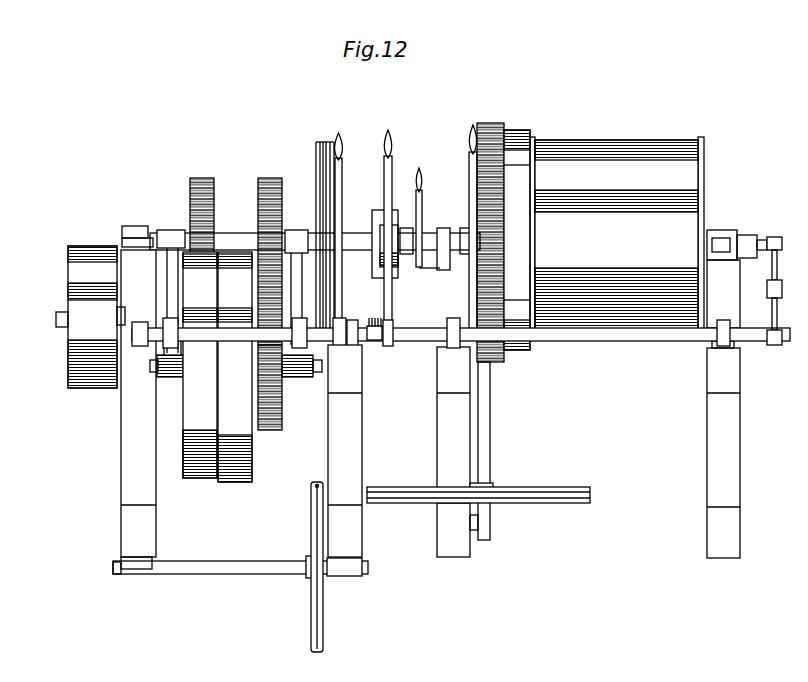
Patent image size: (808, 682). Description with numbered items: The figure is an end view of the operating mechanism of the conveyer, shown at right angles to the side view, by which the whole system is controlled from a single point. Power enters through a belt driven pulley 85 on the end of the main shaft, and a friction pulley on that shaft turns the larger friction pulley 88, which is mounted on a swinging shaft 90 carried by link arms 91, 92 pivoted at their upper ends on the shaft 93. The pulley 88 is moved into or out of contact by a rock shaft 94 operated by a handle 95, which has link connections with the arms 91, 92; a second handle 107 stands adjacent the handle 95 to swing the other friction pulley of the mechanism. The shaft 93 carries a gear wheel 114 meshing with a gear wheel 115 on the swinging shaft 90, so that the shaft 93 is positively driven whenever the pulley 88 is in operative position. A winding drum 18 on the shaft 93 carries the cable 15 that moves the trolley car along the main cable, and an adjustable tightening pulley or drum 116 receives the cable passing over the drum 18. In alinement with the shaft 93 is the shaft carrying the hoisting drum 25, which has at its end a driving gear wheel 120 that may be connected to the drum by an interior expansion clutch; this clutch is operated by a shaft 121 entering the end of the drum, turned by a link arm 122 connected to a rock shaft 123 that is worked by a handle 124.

The belt driven pulley 85 is at (68, 270).
The link arm 91 is at (166, 244).
The shaft 93 is at (228, 238).
The friction pulley 88 is at (200, 365).
The swinging shaft 90 is at (213, 372).
The gear wheel 114 is at (272, 172).
The gear wheel 115 is at (275, 403).
The link arm 92 is at (292, 247).
The winding drum 18 is at (318, 142).
The handle 95 is at (343, 174).
The handle 107 is at (392, 167).
The handle 124 is at (470, 172).
The driving gear wheel 120 is at (495, 360).
The drum 25 is at (600, 136).
The rock shaft 94 is at (240, 333).
The shaft 121 is at (762, 238).
The link arm 122 is at (783, 284).
The rock shaft 123 is at (750, 341).
The cable 15 is at (328, 400).
The adjustable tightening pulley or drum 116 is at (324, 597).